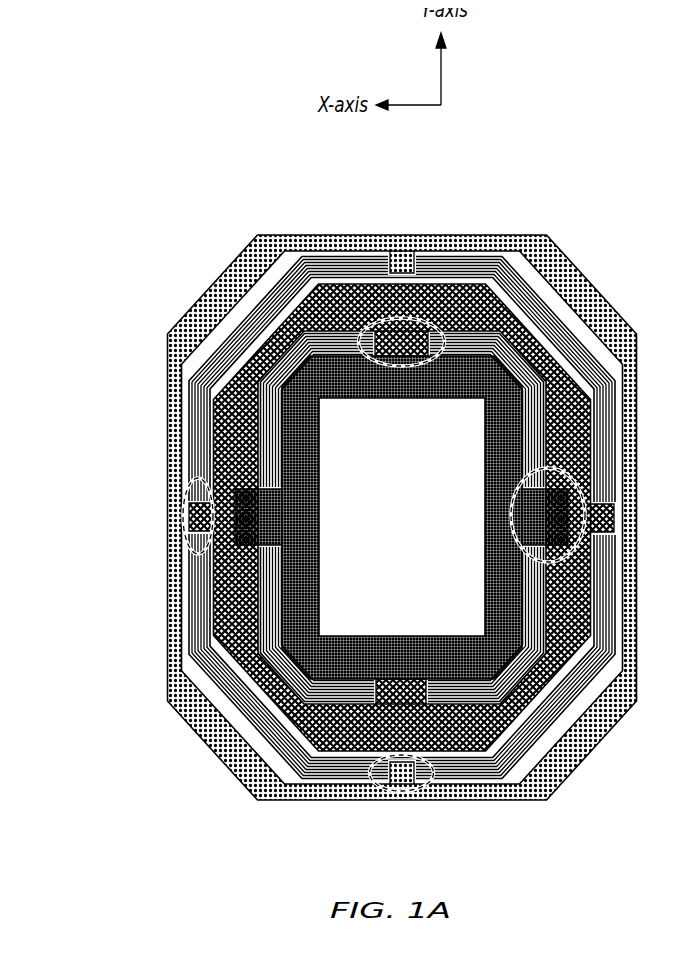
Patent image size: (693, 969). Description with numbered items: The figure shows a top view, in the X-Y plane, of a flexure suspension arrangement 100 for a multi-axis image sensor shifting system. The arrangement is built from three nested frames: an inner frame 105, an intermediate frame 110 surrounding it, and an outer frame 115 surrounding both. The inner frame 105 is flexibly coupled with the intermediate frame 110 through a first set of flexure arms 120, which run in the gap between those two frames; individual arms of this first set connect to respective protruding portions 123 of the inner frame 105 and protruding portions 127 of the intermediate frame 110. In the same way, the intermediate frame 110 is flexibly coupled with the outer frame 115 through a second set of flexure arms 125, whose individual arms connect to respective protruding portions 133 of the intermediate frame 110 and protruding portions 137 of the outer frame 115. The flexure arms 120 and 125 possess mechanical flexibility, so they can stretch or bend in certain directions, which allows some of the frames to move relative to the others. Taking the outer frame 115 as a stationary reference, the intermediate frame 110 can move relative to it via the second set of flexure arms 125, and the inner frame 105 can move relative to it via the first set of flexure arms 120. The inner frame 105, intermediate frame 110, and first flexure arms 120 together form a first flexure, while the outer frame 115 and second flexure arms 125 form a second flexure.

The flexure suspension arrangement 100 is at (186, 117).
The inner frame 105 is at (375, 637).
The intermediate frame 110 is at (352, 283).
The outer frame 115 is at (480, 228).
The first set of flexure arms 120 is at (267, 443).
The protruding portion of inner frame 123 is at (508, 500).
The second set of flexure arms 125 is at (243, 303).
The protruding portion of intermediate frame 127 is at (389, 352).
The protruding portion of intermediate frame 133 is at (179, 491).
The protruding portion of outer frame 137 is at (386, 783).